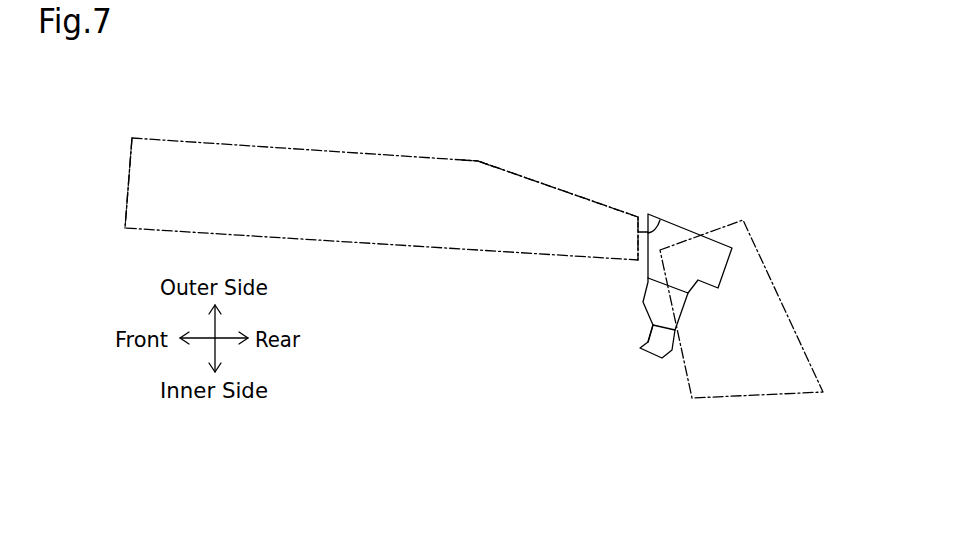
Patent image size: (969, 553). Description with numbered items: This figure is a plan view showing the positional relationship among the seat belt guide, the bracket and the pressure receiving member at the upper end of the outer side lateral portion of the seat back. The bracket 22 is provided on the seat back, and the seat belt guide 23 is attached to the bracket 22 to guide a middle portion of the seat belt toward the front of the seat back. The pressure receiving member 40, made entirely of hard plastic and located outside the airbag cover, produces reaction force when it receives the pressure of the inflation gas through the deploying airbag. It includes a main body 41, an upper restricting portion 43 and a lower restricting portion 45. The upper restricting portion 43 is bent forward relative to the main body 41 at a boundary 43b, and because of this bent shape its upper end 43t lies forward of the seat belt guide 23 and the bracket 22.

The pressure receiving member 40 is at (381, 158).
The main body 41 is at (375, 155).
The lower restricting portion 45 is at (145, 138).
The upper restricting portion 43 is at (553, 187).
The boundary 43b is at (478, 161).
The upper end 43t is at (660, 220).
The bracket 22 is at (675, 235).
The seat belt guide 23 is at (783, 305).